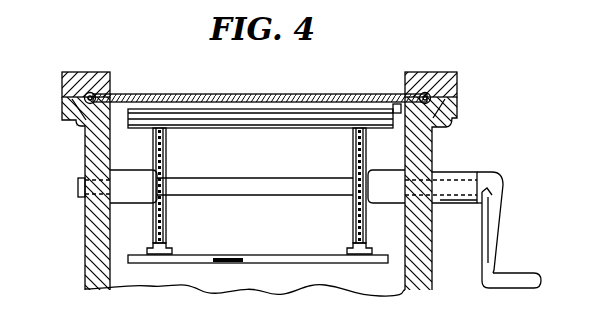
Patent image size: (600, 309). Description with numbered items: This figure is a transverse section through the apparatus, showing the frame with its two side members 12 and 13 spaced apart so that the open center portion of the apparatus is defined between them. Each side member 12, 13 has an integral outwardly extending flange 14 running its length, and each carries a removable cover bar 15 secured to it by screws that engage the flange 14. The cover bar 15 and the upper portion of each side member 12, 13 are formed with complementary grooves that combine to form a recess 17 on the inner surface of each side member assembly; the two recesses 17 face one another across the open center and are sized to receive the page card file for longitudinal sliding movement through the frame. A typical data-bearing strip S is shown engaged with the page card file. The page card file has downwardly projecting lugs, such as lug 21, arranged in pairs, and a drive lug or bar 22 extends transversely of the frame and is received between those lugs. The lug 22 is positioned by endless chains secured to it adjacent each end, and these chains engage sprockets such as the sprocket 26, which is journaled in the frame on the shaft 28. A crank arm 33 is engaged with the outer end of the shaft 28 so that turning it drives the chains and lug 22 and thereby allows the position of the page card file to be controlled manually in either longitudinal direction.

The side member 12 is at (85, 244).
The side member 13 is at (405, 280).
The flange 14 is at (76, 125).
The cover bar 15 is at (88, 73).
The recess 17 is at (420, 99).
The lug 21 is at (128, 110).
The lug 22 is at (329, 128).
The sprocket 26 is at (166, 220).
The shaft 28 is at (303, 178).
The crank arm 33 is at (482, 247).
The data-bearing strip S is at (373, 95).